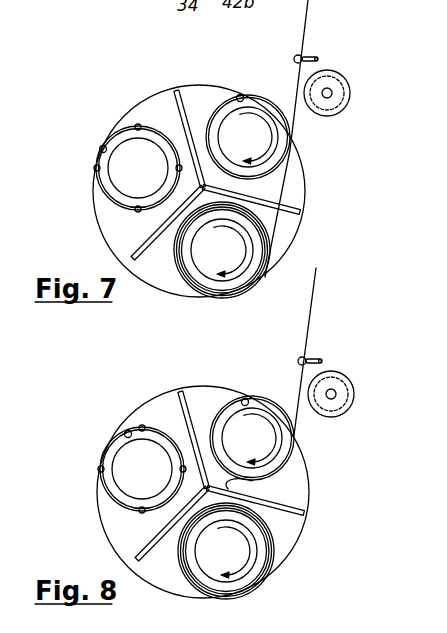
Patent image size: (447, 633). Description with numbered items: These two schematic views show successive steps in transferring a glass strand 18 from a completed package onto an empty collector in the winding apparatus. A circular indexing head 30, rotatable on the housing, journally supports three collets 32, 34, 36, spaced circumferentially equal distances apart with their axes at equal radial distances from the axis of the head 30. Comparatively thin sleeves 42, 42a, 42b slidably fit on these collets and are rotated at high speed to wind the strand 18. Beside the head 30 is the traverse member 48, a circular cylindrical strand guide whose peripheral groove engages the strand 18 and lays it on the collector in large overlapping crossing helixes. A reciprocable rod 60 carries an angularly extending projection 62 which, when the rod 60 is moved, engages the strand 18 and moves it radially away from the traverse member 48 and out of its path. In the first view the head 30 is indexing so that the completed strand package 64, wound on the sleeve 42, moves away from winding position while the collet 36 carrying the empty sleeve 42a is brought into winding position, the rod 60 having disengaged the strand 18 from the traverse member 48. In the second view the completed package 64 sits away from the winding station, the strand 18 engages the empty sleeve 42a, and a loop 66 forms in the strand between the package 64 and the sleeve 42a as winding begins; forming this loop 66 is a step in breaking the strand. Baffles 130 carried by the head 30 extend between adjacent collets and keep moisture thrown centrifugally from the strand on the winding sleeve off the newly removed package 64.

In FIG. 7, the strand 18 is at (309, 17).
In FIG. 8, the strand 18 is at (315, 297).
In FIG. 7, the indexing head 30 is at (148, 92).
In FIG. 8, the indexing head 30 is at (146, 404).
In FIG. 7, the collet 32 is at (204, 277).
In FIG. 8, the collet 32 is at (249, 581).
In FIG. 7, the collet 34 is at (111, 173).
In FIG. 8, the collet 34 is at (121, 459).
In FIG. 7, the collet 36 is at (234, 113).
In FIG. 8, the collet 36 is at (291, 385).
In FIG. 7, the sleeve 42 is at (213, 288).
In FIG. 8, the sleeve 42 is at (259, 581).
In FIG. 7, the sleeve 42a is at (242, 96).
In FIG. 8, the sleeve 42a is at (246, 402).
In FIG. 7, the sleeve 42b is at (103, 149).
In FIG. 8, the sleeve 42b is at (128, 433).
In FIG. 7, the traverse member 48 is at (340, 76).
In FIG. 8, the traverse member 48 is at (343, 383).
In FIG. 7, the rod 60 is at (296, 55).
In FIG. 8, the rod 60 is at (300, 358).
In FIG. 7, the projection 62 is at (318, 56).
In FIG. 8, the projection 62 is at (321, 359).
In FIG. 7, the completed strand package 64 is at (218, 298).
In FIG. 8, the completed strand package 64 is at (218, 596).
In FIG. 8, the loop 66 is at (234, 486).
In FIG. 7, the baffles 130 is at (196, 67).
In FIG. 8, the baffles 130 is at (179, 392).